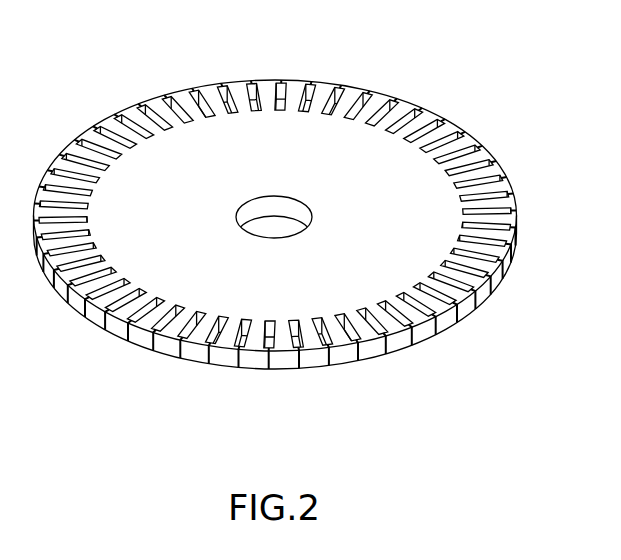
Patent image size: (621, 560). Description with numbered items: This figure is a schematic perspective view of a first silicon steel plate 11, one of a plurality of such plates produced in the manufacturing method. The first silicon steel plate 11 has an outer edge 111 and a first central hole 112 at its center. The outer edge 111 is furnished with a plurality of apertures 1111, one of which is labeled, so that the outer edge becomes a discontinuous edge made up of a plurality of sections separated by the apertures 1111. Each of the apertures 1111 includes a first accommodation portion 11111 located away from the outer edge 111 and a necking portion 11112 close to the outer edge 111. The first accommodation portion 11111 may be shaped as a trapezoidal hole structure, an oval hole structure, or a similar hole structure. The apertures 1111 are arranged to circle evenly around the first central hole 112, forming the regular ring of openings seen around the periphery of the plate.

The first silicon steel plate 11 is at (305, 250).
The outer edge 111 is at (78, 306).
The first central hole 112 is at (261, 207).
The aperture 1111 is at (275, 281).
The first accommodation portion 11111 is at (172, 329).
The necking portion 11112 is at (200, 350).